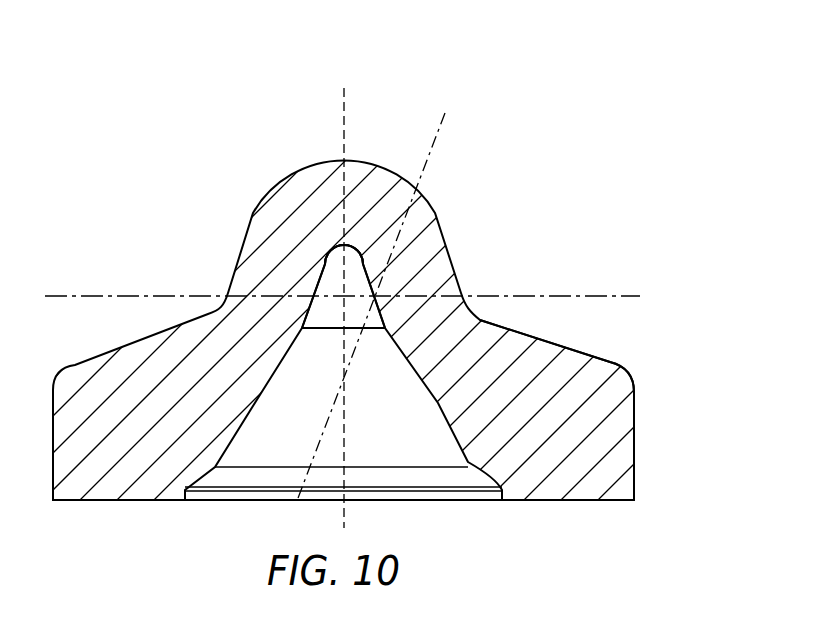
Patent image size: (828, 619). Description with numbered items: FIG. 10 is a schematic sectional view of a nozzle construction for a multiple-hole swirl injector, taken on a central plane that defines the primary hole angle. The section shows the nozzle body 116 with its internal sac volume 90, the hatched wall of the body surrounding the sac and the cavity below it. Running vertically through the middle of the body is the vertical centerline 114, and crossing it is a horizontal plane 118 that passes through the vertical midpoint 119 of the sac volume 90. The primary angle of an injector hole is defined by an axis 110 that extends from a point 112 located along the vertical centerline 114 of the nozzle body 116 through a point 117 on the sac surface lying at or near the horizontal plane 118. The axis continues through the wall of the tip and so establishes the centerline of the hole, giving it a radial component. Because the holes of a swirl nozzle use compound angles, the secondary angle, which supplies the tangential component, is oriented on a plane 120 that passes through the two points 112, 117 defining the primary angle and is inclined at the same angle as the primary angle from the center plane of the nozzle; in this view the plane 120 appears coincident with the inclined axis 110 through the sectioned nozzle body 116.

The sac volume 90 is at (333, 262).
The axis 110 is at (343, 306).
The point 112 is at (344, 378).
The vertical centerline 114 is at (344, 97).
The nozzle body 116 is at (611, 362).
The point 117 is at (377, 293).
The horizontal plane 118 is at (565, 296).
The vertical midpoint 119 is at (343, 295).
The plane 120 is at (436, 132).